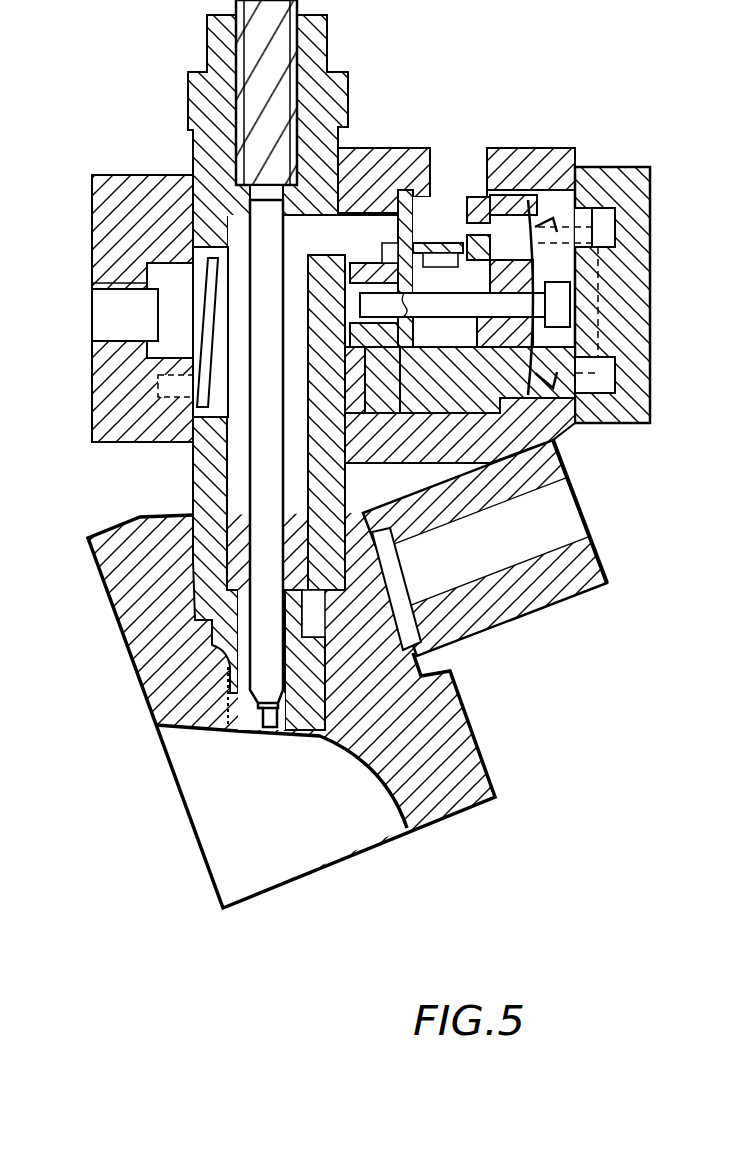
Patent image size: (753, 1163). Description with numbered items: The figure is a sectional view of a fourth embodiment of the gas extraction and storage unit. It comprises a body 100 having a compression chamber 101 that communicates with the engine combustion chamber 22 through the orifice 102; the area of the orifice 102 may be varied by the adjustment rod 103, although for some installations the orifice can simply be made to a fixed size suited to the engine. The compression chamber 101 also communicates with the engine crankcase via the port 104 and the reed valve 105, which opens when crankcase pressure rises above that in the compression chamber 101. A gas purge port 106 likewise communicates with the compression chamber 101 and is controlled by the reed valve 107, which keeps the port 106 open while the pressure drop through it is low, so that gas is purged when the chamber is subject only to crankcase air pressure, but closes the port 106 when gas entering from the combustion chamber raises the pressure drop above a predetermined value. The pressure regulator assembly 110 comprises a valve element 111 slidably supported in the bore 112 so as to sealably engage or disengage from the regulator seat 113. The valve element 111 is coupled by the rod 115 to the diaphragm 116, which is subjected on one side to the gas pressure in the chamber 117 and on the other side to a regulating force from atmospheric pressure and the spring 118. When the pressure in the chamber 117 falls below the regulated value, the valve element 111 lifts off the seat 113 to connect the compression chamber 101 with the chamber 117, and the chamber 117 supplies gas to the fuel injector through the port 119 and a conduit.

The combustion chamber 22 is at (287, 863).
The body 100 is at (195, 470).
The compression chamber 101 is at (240, 500).
The orifice 102 is at (272, 722).
The adjustment rod 103 is at (263, 673).
The port 104 is at (170, 327).
The reed valve 105 is at (177, 272).
The gas purge port 106 is at (405, 560).
The reed valve 107 is at (483, 607).
The pressure regulator assembly 110 is at (552, 340).
The valve element 111 is at (363, 432).
The bore 112 is at (340, 285).
The regulator seat 113 is at (430, 215).
The rod 115 is at (530, 307).
The diaphragm 116 is at (560, 220).
The chamber 117 is at (457, 210).
The spring 118 is at (583, 250).
The port 119 is at (441, 150).